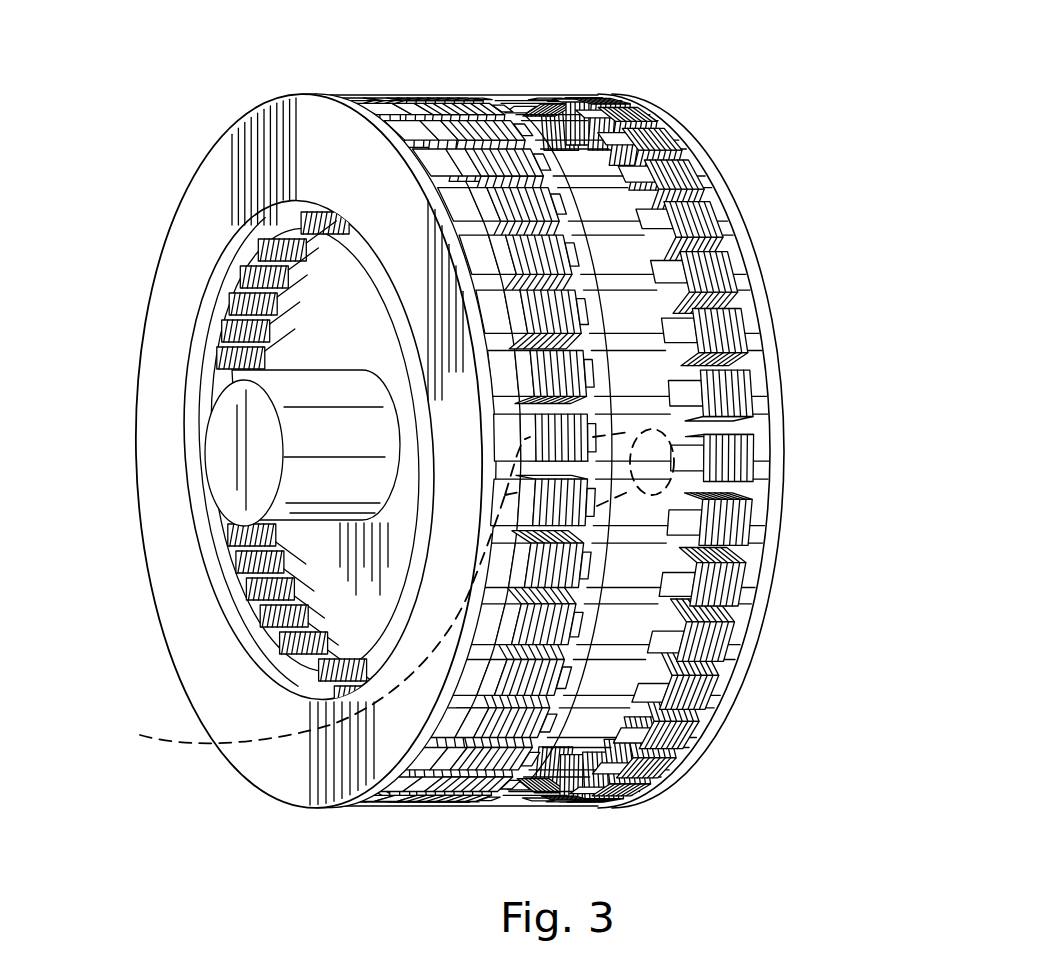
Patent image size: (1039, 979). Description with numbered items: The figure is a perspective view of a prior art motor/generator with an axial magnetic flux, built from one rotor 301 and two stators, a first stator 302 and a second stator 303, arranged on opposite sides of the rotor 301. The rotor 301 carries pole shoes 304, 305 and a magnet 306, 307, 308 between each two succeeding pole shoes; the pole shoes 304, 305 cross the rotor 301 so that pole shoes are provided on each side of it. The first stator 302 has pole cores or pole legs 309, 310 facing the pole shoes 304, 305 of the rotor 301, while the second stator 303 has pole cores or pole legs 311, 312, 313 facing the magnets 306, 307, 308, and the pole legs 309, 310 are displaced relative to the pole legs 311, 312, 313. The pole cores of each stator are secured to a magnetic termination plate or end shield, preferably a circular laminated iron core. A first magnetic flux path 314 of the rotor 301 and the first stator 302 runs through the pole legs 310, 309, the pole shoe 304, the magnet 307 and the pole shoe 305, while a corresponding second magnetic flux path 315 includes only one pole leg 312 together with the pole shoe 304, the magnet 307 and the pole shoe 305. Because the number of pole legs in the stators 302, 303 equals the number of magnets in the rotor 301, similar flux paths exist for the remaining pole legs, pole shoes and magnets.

The rotor 301 is at (474, 104).
The first stator 302 is at (307, 138).
The second stator 303 is at (690, 168).
The pole shoe 304 is at (643, 437).
The pole shoe 305 is at (650, 468).
The magnet 306 is at (633, 400).
The magnet 307 is at (690, 520).
The magnet 308 is at (630, 530).
The pole leg 309 is at (553, 497).
The pole leg 310 is at (553, 440).
The pole leg 311 is at (737, 400).
The pole leg 312 is at (737, 467).
The pole leg 313 is at (737, 530).
The first magnetic flux path 314 is at (356, 594).
The second magnetic flux path 315 is at (675, 478).